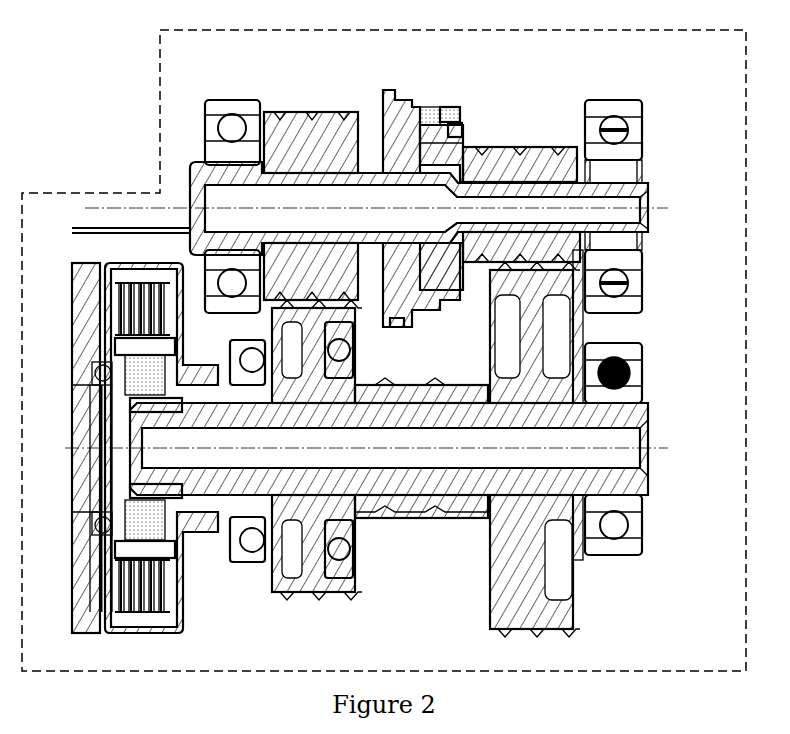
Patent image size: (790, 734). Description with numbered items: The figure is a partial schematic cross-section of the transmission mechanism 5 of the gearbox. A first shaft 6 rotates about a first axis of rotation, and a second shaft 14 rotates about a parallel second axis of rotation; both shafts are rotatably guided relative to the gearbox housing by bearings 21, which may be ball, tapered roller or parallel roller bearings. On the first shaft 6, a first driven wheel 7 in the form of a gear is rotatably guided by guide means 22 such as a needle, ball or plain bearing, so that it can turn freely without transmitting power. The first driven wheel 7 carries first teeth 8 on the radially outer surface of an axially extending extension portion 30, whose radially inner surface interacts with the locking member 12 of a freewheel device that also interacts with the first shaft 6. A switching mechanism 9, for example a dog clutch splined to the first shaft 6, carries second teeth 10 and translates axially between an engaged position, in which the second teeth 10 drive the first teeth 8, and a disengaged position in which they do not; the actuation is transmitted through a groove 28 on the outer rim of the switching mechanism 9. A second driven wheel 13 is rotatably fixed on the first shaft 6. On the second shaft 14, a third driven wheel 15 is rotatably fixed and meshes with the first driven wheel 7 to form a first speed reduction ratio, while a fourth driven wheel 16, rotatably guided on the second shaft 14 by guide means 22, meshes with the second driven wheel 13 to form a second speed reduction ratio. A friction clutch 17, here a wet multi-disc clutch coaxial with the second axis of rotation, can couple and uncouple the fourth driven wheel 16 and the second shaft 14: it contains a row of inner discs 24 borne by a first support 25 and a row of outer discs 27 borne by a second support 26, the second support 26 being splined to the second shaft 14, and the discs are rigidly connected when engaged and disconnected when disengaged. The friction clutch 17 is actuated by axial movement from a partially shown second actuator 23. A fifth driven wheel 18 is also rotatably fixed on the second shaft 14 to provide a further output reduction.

The transmission mechanism 5 is at (150, 142).
The first shaft 6 is at (652, 188).
The first driven wheel 7 is at (548, 146).
The first teeth 8 is at (453, 110).
The switching mechanism 9 is at (377, 98).
The second teeth 10 is at (426, 114).
The locking member 12 is at (479, 152).
The second driven wheel 13 is at (315, 108).
The second shaft 14 is at (652, 412).
The third driven wheel 15 is at (582, 612).
The fourth driven wheel 16 is at (362, 598).
The friction clutch 17 is at (190, 630).
The fifth driven wheel 18 is at (395, 530).
The bearings 21 is at (240, 100).
The guide means 22 is at (556, 232).
The second actuator 23 is at (70, 268).
The inner discs 24 is at (124, 297).
The first support 25 is at (155, 490).
The second support 26 is at (96, 525).
The outer discs 27 is at (119, 322).
The groove 28 is at (401, 323).
The extension portion 30 is at (458, 127).